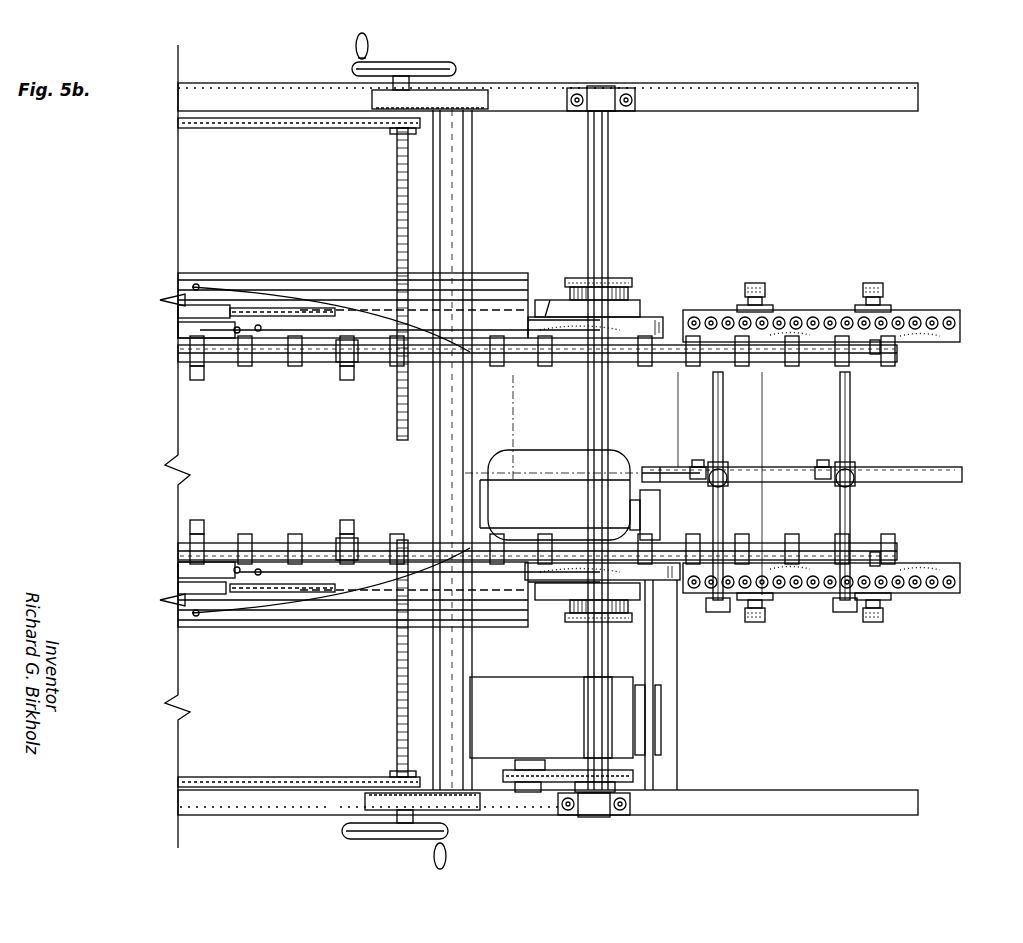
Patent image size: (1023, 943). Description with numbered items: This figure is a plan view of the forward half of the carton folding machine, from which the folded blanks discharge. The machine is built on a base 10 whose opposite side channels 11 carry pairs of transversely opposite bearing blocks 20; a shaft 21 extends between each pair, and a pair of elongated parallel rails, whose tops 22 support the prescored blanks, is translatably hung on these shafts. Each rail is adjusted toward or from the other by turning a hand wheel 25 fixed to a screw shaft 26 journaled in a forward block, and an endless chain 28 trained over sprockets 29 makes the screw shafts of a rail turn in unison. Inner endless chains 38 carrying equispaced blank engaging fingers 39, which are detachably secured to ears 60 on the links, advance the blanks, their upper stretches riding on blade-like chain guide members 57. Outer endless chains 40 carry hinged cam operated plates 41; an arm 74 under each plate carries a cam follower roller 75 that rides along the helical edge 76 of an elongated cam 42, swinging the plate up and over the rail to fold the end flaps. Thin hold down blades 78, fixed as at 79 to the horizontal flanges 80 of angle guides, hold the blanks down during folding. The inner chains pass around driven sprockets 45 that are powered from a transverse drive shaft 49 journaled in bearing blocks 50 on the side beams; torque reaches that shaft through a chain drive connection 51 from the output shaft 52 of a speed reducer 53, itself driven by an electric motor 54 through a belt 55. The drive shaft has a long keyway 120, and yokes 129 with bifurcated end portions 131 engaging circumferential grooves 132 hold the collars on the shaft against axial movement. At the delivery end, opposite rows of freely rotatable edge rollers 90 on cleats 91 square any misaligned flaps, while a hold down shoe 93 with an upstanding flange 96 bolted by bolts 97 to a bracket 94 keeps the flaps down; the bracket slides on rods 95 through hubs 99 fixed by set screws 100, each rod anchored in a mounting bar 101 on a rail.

The base 10 is at (910, 716).
The side channels 11 is at (745, 95).
The bearing blocks 20 is at (485, 87).
The shaft 21 is at (440, 705).
The tops of rails 22 is at (663, 325).
The hand wheel 25 is at (378, 68).
The screw shafts 26 is at (396, 178).
The endless chain 28 is at (228, 128).
The sprockets 29 is at (394, 130).
The endless chains 38 is at (262, 362).
The blank engaging fingers 39 is at (340, 363).
The endless chains 40 is at (268, 308).
The hinged cam operated plates 41 is at (212, 305).
The elongated cams 42 is at (312, 283).
The driven sprockets 45 is at (875, 362).
The drive shaft 49 is at (590, 662).
The bearing blocks 50 is at (612, 88).
The chain drive connection 51 is at (633, 776).
The output shaft 52 is at (530, 793).
The speed reducer 53 is at (505, 688).
The electric motor 54 is at (562, 460).
The belt 55 is at (650, 666).
The chain guide members 57 is at (282, 364).
The ears 60 is at (190, 372).
The arm 74 is at (176, 298).
The cam follower roller 75 is at (195, 284).
The cam edge 76 is at (240, 292).
The hold down blades 78 is at (330, 330).
The fixing 79 is at (237, 350).
The horizontal flanges 80 is at (178, 330).
The edge rollers 90 is at (800, 320).
The cleats 91 is at (920, 312).
The hold down shoe 93 is at (765, 470).
The bracket 94 is at (796, 470).
The rods 95 is at (723, 530).
The upstanding flange 96 is at (888, 467).
The bolts 97 is at (698, 460).
The hubs 99 is at (727, 484).
The set screws 100 is at (720, 468).
The mounting bar 101 is at (716, 612).
The keyway 120 is at (586, 712).
The yokes 129 is at (555, 300).
The bifurcated end portion 131 is at (590, 285).
The circumferential groove 132 is at (628, 290).